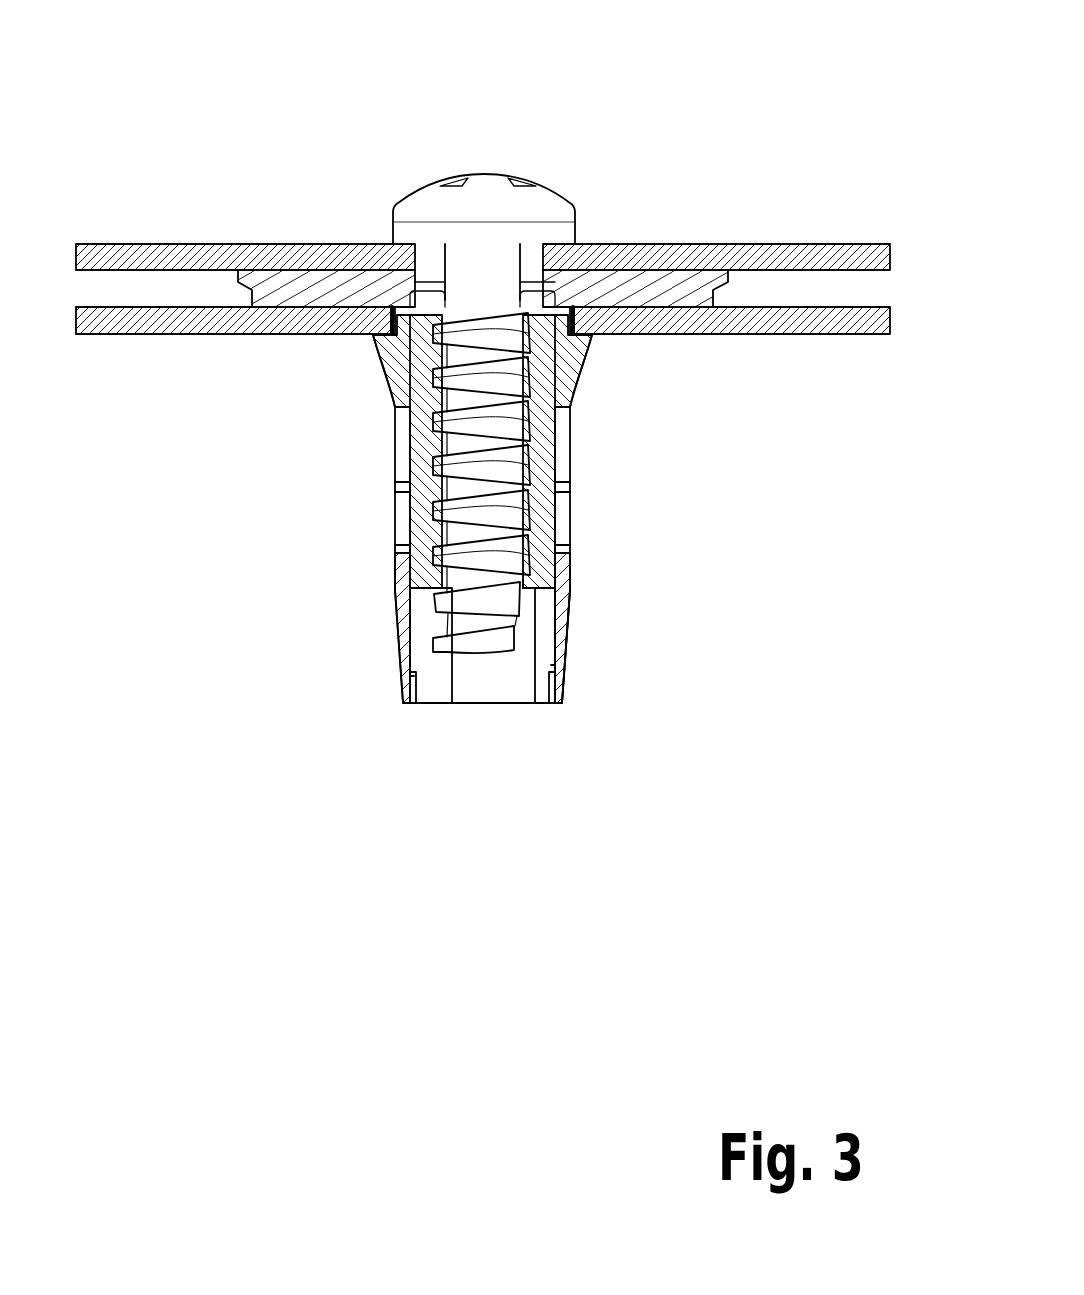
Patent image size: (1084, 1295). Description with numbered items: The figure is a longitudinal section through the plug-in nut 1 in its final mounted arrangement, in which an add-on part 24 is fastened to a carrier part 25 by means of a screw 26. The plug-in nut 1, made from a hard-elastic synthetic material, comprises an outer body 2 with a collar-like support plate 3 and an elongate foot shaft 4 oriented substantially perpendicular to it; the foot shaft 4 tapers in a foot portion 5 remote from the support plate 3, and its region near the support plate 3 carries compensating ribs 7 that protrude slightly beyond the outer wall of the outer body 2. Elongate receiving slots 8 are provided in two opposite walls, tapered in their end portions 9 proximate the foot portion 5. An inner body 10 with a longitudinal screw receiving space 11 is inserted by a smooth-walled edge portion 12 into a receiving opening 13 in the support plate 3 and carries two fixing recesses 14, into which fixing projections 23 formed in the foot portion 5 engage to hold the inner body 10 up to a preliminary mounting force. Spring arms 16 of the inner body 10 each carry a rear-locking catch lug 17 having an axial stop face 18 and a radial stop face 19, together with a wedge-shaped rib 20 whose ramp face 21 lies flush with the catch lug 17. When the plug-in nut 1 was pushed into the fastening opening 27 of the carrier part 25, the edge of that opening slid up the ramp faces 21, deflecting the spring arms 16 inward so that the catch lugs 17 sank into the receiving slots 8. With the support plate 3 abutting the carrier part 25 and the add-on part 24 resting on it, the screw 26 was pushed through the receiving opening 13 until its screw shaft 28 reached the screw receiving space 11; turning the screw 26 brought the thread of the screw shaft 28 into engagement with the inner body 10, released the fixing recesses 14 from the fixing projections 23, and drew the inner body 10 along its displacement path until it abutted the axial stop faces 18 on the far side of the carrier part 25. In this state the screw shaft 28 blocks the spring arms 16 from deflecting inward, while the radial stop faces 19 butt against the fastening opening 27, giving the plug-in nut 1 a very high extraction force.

The plug-in nut 1 is at (367, 713).
The outer body 2 is at (418, 551).
The support plate 3 is at (700, 288).
The foot shaft 4 is at (573, 593).
The foot portion 5 is at (567, 692).
The compensating ribs 7 is at (575, 408).
The receiving slots 8 is at (404, 464).
The end portions 9 is at (404, 543).
The inner body 10 is at (423, 598).
The screw receiving space 11 is at (565, 525).
The edge portion 12 is at (568, 608).
The receiving opening 13 is at (418, 292).
The fixing recesses 14 is at (385, 648).
The spring arms 16 is at (397, 501).
The rear-locking catch lugs 17 is at (392, 353).
The axial stop face 18 is at (373, 338).
The radial stop face 19 is at (564, 309).
The wedge-shaped rib 20 is at (395, 407).
The ramp face 21 is at (397, 410).
The fixing projections 23 is at (413, 680).
The add-on part 24 is at (865, 256).
The carrier part 25 is at (867, 318).
The screw 26 is at (488, 205).
The fastening opening 27 is at (562, 302).
The screw shaft 28 is at (483, 620).